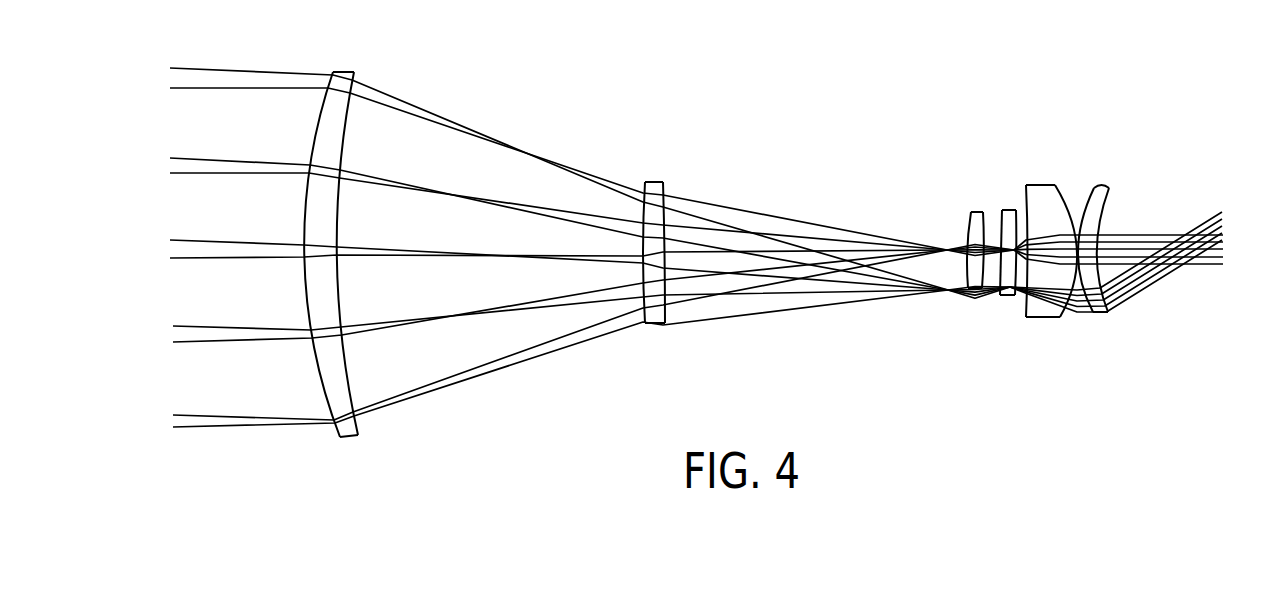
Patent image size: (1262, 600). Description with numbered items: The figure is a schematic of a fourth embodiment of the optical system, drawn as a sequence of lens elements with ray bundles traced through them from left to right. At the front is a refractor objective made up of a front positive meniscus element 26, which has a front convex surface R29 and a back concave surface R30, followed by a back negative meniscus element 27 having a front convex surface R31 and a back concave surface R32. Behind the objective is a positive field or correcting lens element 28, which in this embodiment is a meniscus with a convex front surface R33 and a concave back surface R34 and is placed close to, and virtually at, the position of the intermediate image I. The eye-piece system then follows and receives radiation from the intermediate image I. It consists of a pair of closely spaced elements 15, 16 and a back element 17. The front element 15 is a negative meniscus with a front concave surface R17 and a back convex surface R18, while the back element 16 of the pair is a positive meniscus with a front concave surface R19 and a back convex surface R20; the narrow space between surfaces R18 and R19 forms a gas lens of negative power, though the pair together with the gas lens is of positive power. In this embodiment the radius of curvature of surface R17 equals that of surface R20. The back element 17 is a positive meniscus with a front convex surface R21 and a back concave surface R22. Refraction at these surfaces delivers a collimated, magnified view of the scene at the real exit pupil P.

The front positive meniscus element 26 is at (355, 257).
The back negative meniscus element 27 is at (660, 268).
The positive field or correcting lens element 28 is at (954, 272).
The front element 15 is at (1002, 194).
The back element 16 is at (1063, 245).
The back element 17 is at (1129, 244).
The front concave surface R17 is at (1002, 212).
The back convex surface R18 is at (1015, 210).
The front concave surface R19 is at (1023, 322).
The back convex surface R20 is at (1067, 318).
The front convex surface R21 is at (1092, 196).
The back concave surface R22 is at (1106, 208).
The front convex surface R29 is at (329, 411).
The back concave surface R30 is at (359, 414).
The front convex surface R31 is at (643, 307).
The back concave surface R32 is at (667, 307).
The convex front surface R33 is at (967, 283).
The concave back surface R34 is at (981, 290).
The intermediate image I is at (952, 232).
The real exit pupil P is at (1190, 272).